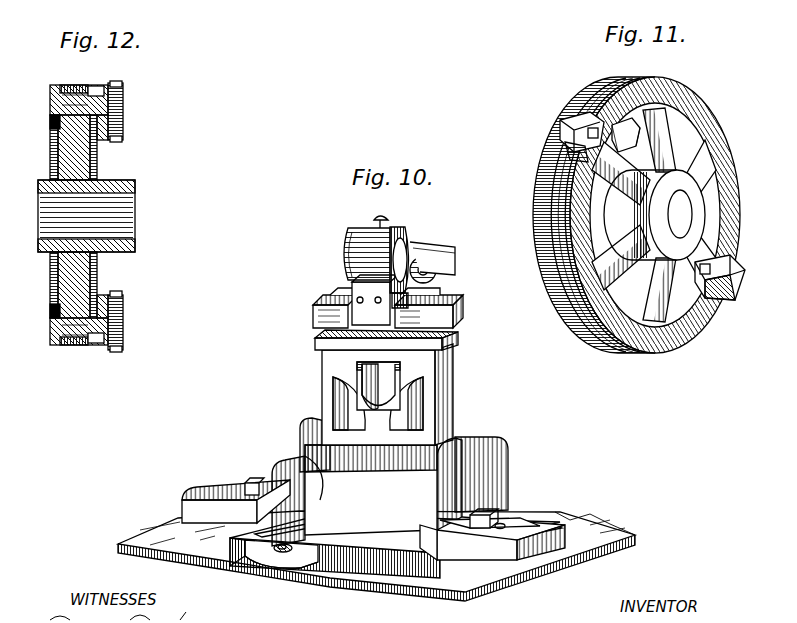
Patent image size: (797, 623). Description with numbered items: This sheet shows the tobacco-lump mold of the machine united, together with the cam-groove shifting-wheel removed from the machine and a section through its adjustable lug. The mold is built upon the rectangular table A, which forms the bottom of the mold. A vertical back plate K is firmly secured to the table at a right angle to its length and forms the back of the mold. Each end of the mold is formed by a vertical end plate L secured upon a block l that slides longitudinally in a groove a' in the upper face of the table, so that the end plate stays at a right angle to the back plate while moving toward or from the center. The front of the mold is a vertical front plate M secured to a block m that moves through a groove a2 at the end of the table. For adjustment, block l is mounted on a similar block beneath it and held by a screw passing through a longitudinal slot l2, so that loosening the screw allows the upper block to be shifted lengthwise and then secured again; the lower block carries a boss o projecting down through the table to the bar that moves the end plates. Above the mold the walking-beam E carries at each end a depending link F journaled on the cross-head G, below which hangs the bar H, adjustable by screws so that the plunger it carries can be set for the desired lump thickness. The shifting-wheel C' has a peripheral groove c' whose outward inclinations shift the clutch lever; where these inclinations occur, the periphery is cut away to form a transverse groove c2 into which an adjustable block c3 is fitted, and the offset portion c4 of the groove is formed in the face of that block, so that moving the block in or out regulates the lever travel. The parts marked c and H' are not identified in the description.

In FIG. 12, the wheel C' is at (89, 215).
In FIG. 11, the wheel C' is at (665, 215).
In FIG. 11, the peripheral groove c' is at (583, 215).
In FIG. 11, the spoke lug c is at (630, 135).
In FIG. 12, the transverse groove c2 is at (58, 140).
In FIG. 11, the transverse groove c2 is at (566, 150).
In FIG. 12, the block c3 is at (70, 104).
In FIG. 11, the block c3 is at (568, 134).
In FIG. 12, the offset portion of groove c4 is at (124, 126).
In FIG. 11, the offset portion of groove c4 is at (728, 272).
In FIG. 10, the table A is at (376, 556).
In FIG. 10, the groove a' is at (595, 515).
In FIG. 10, the groove a2 is at (254, 566).
In FIG. 10, the boss o is at (415, 568).
In FIG. 10, the block m is at (408, 529).
In FIG. 10, the end plate L is at (367, 492).
In FIG. 10, the front plate M is at (371, 490).
In FIG. 10, the back plate K is at (300, 430).
In FIG. 10, the block l is at (235, 497).
In FIG. 10, the longitudinal slot l2 is at (498, 520).
In FIG. 10, the bar H is at (399, 394).
In FIG. 10, the cap plate H' is at (371, 346).
In FIG. 10, the cross-head G is at (458, 322).
In FIG. 10, the link F is at (390, 270).
In FIG. 10, the walking-beam E is at (445, 240).